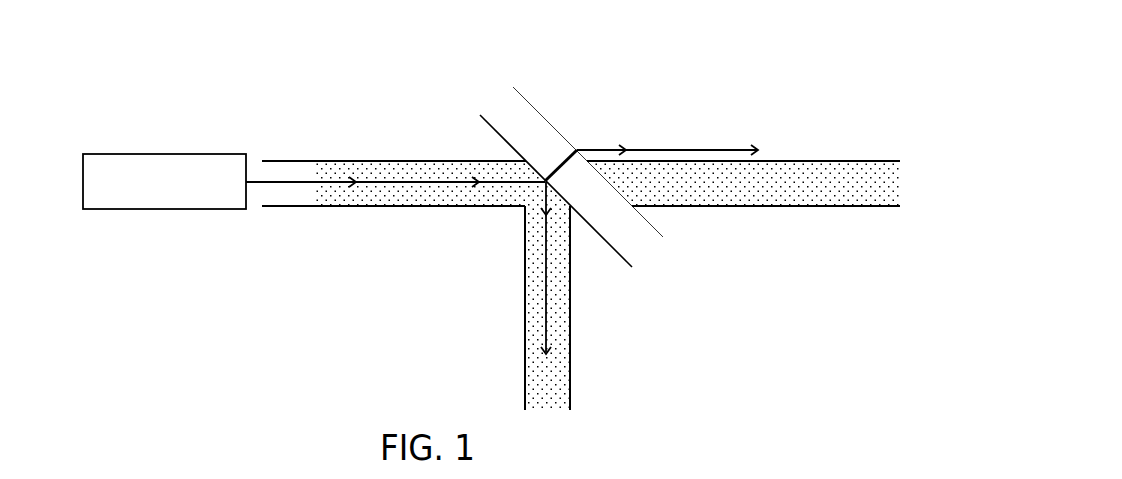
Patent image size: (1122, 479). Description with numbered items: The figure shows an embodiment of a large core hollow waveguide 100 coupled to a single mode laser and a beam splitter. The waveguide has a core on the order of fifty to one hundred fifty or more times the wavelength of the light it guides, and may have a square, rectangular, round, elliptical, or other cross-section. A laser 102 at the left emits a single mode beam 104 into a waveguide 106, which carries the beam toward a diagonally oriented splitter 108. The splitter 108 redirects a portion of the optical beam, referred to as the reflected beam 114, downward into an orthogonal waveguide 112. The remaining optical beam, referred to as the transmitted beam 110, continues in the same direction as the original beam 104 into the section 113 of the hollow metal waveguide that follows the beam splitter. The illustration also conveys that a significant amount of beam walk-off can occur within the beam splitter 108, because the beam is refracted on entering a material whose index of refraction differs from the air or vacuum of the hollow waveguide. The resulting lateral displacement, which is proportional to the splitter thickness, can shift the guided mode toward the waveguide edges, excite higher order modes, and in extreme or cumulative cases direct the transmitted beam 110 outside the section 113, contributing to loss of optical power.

The large core hollow waveguide 100 is at (388, 112).
The laser 102 is at (166, 209).
The single mode beam 104 is at (375, 183).
The waveguide 106 is at (293, 207).
The splitter 108 is at (514, 88).
The transmitted beam 110 is at (707, 150).
The orthogonal waveguide 112 is at (572, 310).
The section of the hollow metal waveguide 113 is at (808, 207).
The reflected beam 114 is at (546, 323).